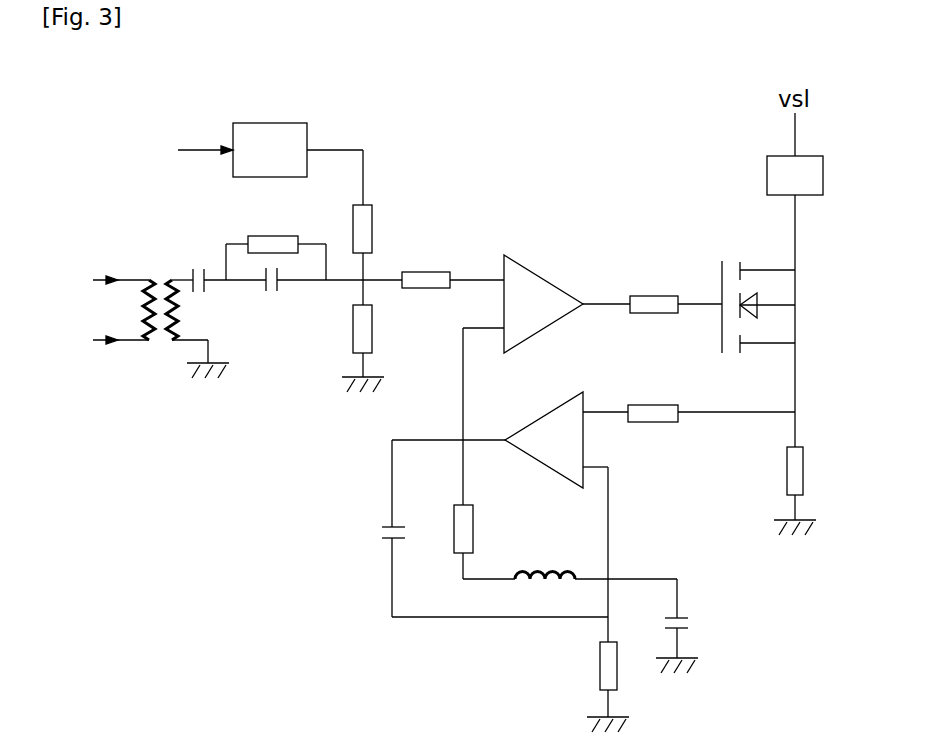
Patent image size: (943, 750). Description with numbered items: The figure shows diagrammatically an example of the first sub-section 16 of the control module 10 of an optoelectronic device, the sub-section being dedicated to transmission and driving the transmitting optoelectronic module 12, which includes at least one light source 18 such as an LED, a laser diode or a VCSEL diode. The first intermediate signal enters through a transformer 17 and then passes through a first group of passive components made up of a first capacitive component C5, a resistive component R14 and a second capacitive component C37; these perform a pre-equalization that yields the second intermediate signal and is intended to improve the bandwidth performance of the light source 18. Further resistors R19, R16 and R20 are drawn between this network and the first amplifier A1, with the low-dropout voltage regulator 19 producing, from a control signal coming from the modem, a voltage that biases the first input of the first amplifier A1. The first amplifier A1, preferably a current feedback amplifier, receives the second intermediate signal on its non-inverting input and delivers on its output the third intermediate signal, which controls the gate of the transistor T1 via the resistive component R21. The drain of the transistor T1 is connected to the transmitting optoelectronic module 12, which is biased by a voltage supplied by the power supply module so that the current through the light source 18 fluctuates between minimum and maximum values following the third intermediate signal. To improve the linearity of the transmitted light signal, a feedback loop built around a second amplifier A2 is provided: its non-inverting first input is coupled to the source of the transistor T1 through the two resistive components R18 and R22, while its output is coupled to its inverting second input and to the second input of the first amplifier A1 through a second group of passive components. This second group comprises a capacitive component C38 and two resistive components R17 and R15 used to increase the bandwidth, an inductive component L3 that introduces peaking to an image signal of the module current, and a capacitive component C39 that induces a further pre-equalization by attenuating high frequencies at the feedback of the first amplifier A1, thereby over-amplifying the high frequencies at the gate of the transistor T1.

The control module 10 is at (125, 312).
The first sub-section 16 is at (125, 312).
The transformer 17 is at (157, 342).
The low-dropout voltage regulator 19 is at (263, 123).
The transmitting optoelectronic module 12 is at (741, 167).
The light source 18 is at (767, 177).
The first capacitive component C5 is at (193, 272).
The second capacitive component C37 is at (277, 292).
The capacitive component C38 is at (383, 533).
The capacitive component C39 is at (688, 618).
The resistive component R14 is at (265, 235).
The resistive component R15 is at (600, 667).
The resistor R16 is at (373, 323).
The resistive component R17 is at (473, 527).
The resistive component R18 is at (787, 487).
The resistor R19 is at (375, 220).
The resistor R20 is at (425, 272).
The resistive component R21 is at (647, 295).
The resistive component R22 is at (647, 422).
The first amplifier A1 is at (538, 277).
The second amplifier A2 is at (568, 402).
The transistor T1 is at (721, 333).
The inductive component L3 is at (535, 567).